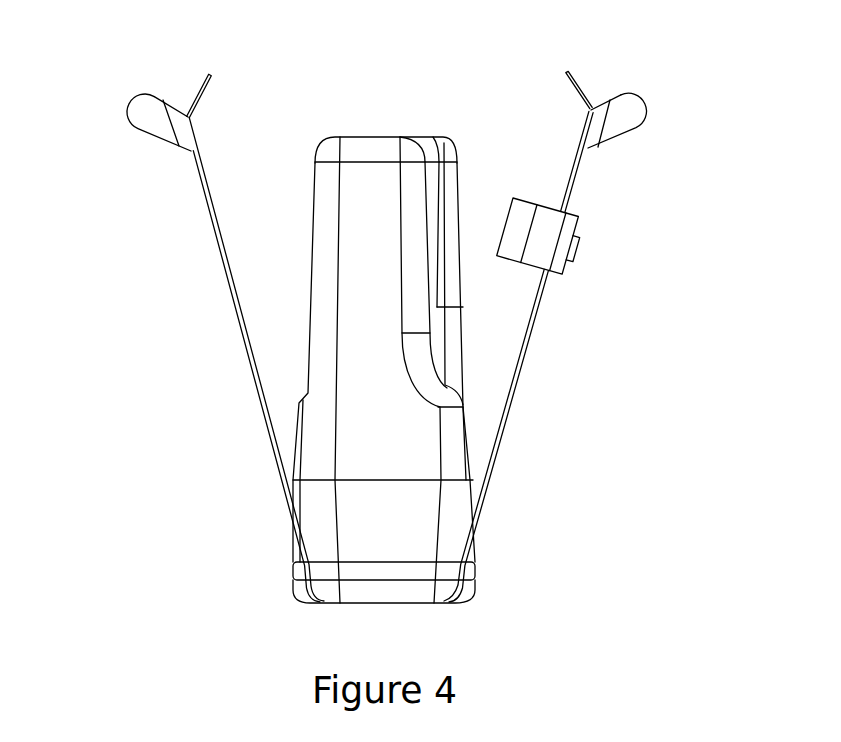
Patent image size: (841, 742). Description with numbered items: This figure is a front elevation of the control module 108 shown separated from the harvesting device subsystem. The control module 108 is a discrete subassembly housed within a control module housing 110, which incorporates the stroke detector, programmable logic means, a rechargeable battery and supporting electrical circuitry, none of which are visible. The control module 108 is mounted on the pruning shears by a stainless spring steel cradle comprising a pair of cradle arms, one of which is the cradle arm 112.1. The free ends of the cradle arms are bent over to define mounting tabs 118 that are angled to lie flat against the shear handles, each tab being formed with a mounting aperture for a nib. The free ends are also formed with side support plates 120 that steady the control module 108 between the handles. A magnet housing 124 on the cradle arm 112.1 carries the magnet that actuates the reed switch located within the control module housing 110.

The control module 108 is at (383, 118).
The control module housing 110 is at (408, 455).
The cradle arm 112.1 is at (532, 332).
The mounting tab 118 is at (198, 100).
The side support plate 120 is at (153, 120).
The magnet housing 124 is at (545, 242).